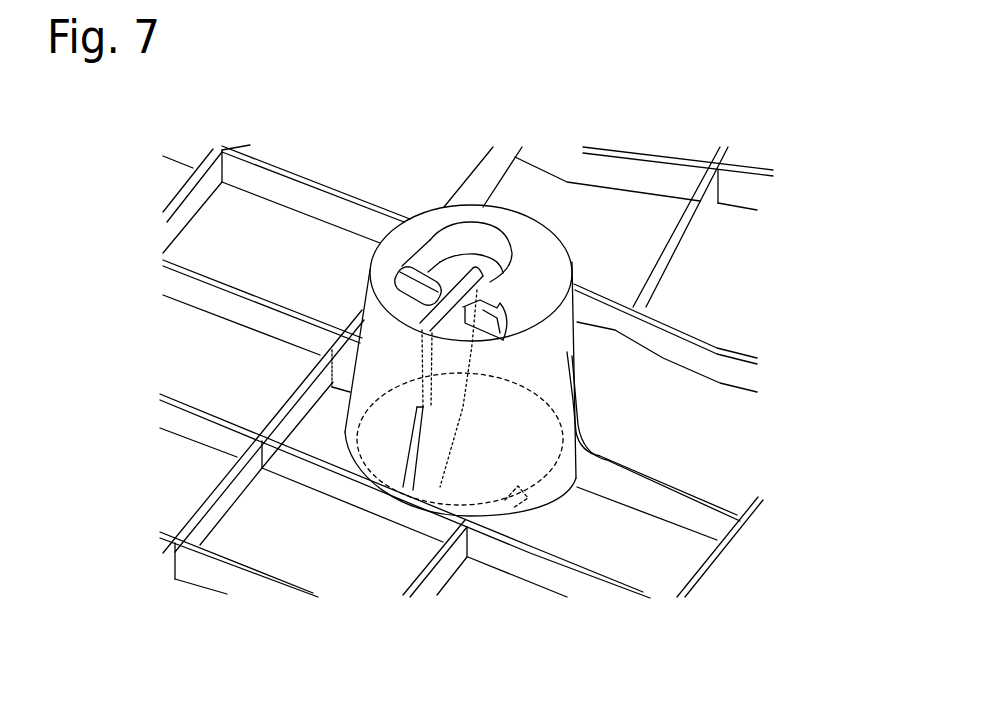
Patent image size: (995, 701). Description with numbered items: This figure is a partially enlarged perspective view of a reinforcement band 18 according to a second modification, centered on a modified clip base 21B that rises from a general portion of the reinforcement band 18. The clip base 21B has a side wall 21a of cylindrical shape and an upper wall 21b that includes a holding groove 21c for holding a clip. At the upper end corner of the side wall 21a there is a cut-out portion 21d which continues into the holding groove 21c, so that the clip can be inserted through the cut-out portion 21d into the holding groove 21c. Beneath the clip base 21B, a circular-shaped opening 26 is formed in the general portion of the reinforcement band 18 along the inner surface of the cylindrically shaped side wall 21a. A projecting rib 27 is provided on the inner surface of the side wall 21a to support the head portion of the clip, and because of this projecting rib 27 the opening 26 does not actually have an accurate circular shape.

The reinforcement band 18 is at (681, 455).
The clip base 21B is at (563, 235).
The side wall 21a is at (567, 343).
The upper wall 21b is at (431, 224).
The holding groove 21c is at (458, 252).
The cut-out portion 21d is at (390, 305).
The opening 26 is at (512, 505).
The projecting rib 27 is at (465, 353).